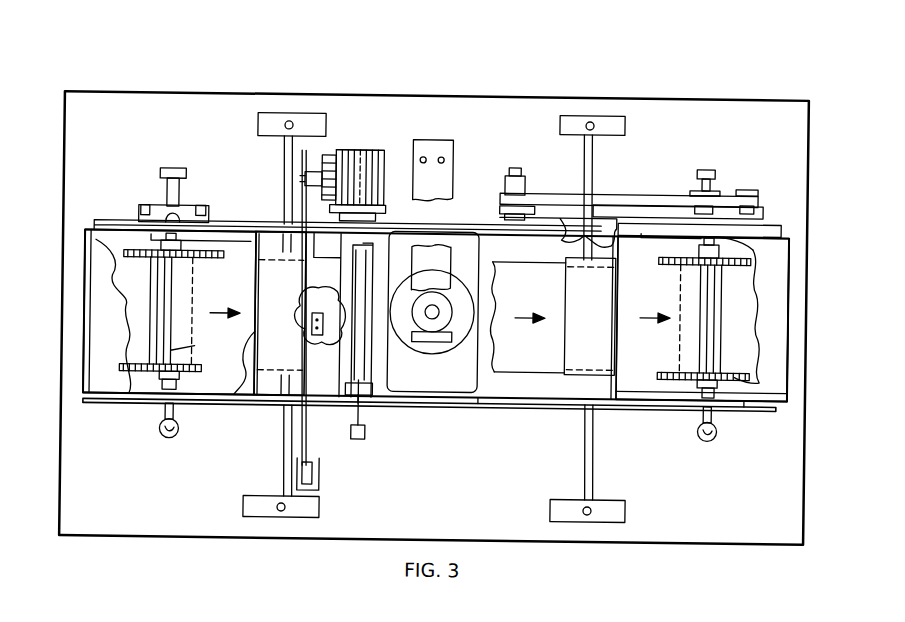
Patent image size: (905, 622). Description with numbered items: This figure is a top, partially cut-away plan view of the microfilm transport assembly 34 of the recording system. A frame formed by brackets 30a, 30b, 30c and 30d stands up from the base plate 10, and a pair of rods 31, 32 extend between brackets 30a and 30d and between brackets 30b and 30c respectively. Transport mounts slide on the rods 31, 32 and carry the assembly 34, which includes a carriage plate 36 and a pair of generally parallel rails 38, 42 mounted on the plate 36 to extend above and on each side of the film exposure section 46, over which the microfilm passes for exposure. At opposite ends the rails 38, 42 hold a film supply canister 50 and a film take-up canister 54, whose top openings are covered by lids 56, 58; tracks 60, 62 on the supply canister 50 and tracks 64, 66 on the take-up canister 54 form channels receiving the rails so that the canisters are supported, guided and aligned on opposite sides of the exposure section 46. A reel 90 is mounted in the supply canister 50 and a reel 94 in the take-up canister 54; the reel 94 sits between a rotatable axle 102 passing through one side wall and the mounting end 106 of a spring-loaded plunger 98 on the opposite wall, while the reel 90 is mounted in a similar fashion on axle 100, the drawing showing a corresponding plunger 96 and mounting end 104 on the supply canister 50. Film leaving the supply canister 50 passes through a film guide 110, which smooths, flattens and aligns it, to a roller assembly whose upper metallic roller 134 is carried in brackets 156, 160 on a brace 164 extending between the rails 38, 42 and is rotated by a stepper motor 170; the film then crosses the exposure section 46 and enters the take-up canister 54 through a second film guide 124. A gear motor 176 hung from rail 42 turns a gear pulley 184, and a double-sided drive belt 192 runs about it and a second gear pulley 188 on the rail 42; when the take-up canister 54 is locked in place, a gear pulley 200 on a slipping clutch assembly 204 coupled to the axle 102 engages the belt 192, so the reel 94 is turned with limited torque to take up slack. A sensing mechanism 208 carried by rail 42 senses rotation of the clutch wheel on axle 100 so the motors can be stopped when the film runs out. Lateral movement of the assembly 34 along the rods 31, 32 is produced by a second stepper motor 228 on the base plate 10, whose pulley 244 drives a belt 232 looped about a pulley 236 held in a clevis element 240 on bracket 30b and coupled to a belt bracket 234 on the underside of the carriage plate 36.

The base plate 10 is at (118, 103).
The bracket 30a is at (600, 522).
The bracket 30b is at (255, 514).
The bracket 30c is at (283, 128).
The bracket 30d is at (603, 128).
The rod 31 is at (600, 460).
The rod 32 is at (282, 440).
The microfilm transport assembly 34 is at (522, 382).
The carriage plate 36 is at (545, 405).
The rail 38 is at (477, 400).
The rail 42 is at (458, 200).
The film exposure section 46 is at (430, 380).
The film supply canister 50 is at (84, 338).
The film take-up canister 54 is at (790, 278).
The lid 56 is at (92, 270).
The lid 58 is at (770, 322).
The track 60 is at (68, 400).
The track 62 is at (97, 220).
The track 64 is at (780, 230).
The track 66 is at (755, 407).
The reel 90 is at (158, 307).
The reel 94 is at (713, 340).
The knob 96 is at (166, 441).
The spring-loaded plunger 98 is at (708, 442).
The axle 100 is at (120, 250).
The rotatable axle 102 is at (760, 253).
The shaft 104 is at (152, 414).
The mounting end 106 is at (703, 396).
The film guide 110 is at (270, 286).
The film guide 124 is at (580, 340).
The upper roller 134 is at (357, 282).
The bracket 156 is at (370, 398).
The bracket 160 is at (388, 165).
The brace 164 is at (345, 388).
The stepper motor 170 is at (370, 160).
The gear motor 176 is at (543, 232).
The gear pulley 184 is at (512, 175).
The gear pulley 188 is at (760, 192).
The double-sided drive belt 192 is at (640, 197).
The gear pulley 200 is at (738, 192).
The slipping clutch assembly 204 is at (692, 216).
The sensing mechanism 208 is at (148, 189).
The second stepper motor 228 is at (333, 158).
The belt 232 is at (298, 434).
The belt bracket 234 is at (312, 325).
The pulley 236 is at (322, 484).
The clevis element 240 is at (315, 490).
The pulley 244 is at (304, 160).